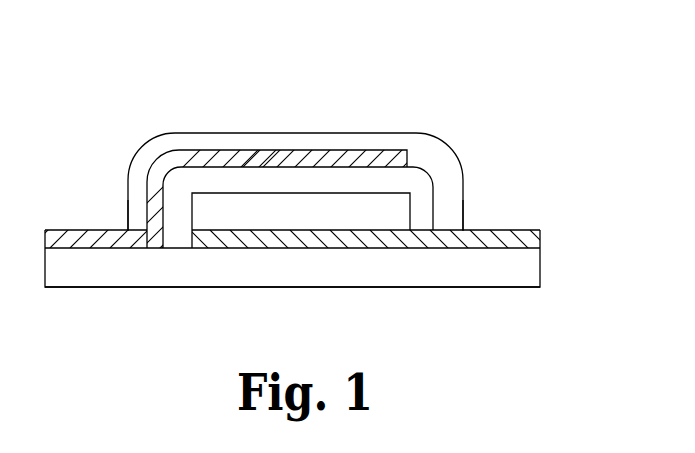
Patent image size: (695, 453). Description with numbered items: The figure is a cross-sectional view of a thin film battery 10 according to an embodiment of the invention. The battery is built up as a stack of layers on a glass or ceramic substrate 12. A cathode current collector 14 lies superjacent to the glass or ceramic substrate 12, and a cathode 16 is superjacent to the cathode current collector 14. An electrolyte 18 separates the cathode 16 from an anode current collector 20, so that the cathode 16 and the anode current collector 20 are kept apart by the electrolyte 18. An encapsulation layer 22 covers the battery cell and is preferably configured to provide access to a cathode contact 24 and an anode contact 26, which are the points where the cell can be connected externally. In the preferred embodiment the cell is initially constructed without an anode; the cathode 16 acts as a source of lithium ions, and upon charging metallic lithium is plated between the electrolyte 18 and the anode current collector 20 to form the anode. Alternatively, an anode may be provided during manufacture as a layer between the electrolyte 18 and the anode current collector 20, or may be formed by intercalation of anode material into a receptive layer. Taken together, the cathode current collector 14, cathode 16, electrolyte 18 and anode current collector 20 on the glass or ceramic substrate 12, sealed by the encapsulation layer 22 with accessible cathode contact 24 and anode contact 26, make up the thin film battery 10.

The thin film battery 10 is at (497, 47).
The glass or ceramic substrate 12 is at (325, 280).
The cathode current collector 14 is at (243, 238).
The cathode 16 is at (315, 224).
The electrolyte 18 is at (313, 182).
The anode current collector 20 is at (253, 150).
The encapsulation layer 22 is at (185, 138).
The cathode contact 24 is at (503, 223).
The anode contact 26 is at (106, 224).